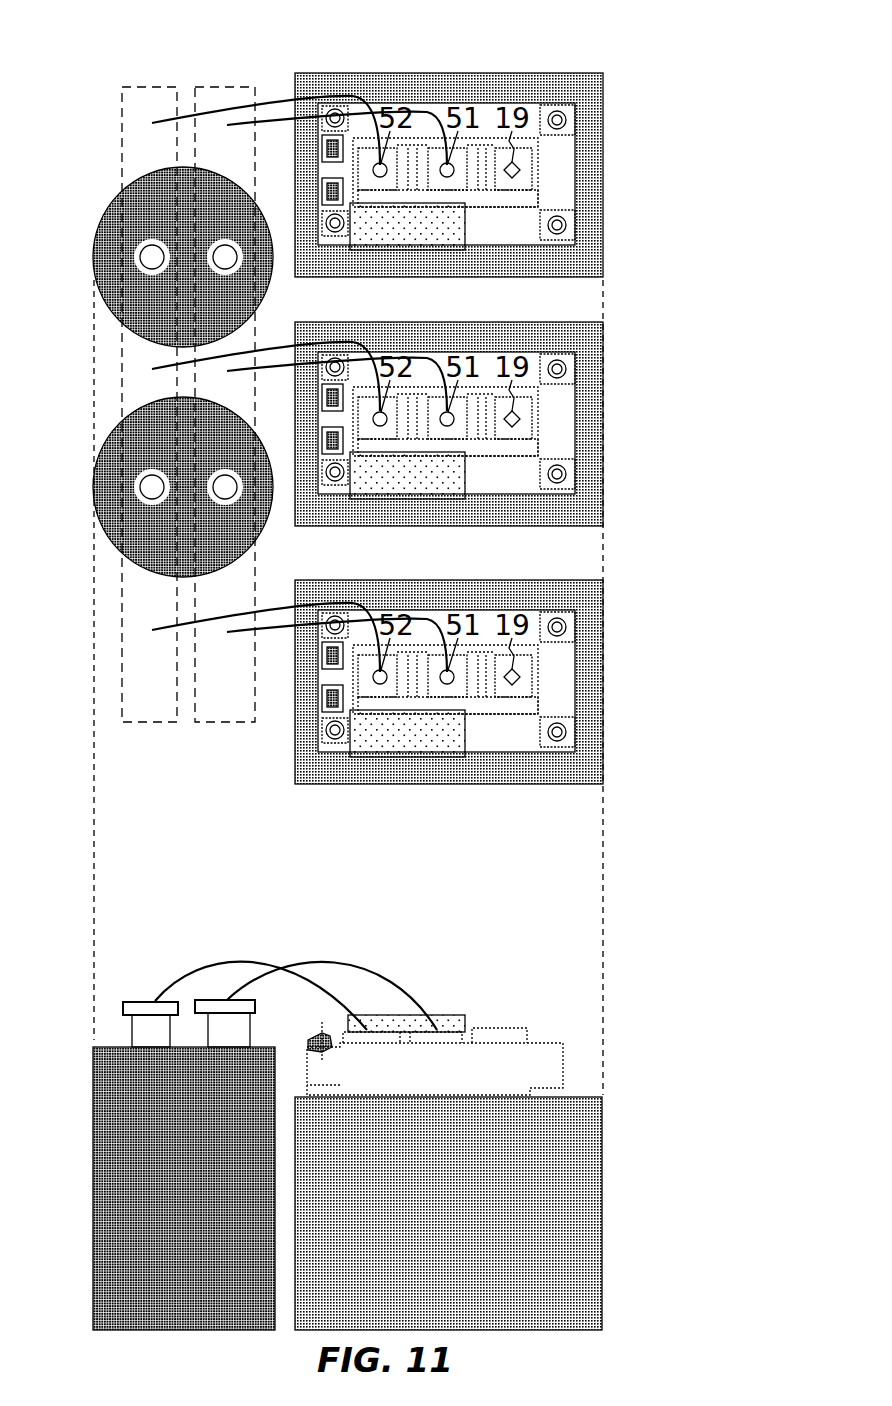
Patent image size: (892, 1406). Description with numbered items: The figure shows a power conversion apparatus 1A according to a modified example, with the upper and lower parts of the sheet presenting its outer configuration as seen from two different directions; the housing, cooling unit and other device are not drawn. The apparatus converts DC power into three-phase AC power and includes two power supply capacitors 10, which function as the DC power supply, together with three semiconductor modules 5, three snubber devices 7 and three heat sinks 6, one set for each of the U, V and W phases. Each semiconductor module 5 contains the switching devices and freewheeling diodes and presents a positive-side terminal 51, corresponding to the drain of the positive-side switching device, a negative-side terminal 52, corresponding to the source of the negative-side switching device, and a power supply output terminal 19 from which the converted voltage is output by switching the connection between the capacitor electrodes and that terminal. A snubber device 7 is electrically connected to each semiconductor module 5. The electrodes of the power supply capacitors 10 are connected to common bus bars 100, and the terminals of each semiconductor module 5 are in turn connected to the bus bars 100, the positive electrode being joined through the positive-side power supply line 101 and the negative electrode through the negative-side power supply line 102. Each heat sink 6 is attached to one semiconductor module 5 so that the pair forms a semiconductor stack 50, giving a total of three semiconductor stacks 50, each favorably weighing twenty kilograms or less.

The power conversion apparatus 1A is at (606, 25).
The semiconductor module 5 is at (622, 1025).
The heat sink 6 is at (606, 1258).
The snubber device 7 is at (374, 279).
The power supply capacitor 10 is at (88, 240).
The power supply output terminal 19 is at (497, 1042).
The semiconductor stack 50 is at (682, 1025).
The positive-side terminal 51 is at (437, 1042).
The negative-side terminal 52 is at (372, 1042).
The bus bar 100 is at (140, 730).
The positive-side power supply line 101 is at (408, 84).
The negative-side power supply line 102 is at (280, 94).